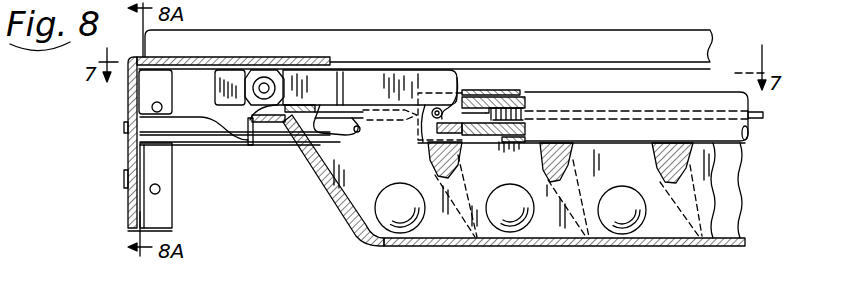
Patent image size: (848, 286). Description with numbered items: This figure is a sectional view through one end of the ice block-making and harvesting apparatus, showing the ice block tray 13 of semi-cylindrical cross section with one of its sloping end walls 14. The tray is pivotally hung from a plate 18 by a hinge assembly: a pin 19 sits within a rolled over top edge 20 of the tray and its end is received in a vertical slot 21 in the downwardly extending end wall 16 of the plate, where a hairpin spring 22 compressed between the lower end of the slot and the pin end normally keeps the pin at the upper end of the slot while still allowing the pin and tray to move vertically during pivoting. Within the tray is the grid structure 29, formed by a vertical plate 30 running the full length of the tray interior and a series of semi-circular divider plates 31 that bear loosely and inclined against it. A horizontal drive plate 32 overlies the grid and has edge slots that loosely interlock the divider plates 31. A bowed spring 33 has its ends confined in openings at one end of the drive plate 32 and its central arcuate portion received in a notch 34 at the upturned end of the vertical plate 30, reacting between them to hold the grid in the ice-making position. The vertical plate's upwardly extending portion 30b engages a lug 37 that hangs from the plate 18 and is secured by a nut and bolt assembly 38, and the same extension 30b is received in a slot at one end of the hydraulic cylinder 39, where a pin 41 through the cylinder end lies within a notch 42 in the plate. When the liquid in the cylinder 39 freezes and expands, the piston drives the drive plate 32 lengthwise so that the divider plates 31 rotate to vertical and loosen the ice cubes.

The ice block tray 13 is at (411, 247).
The sloping end wall 14 is at (326, 188).
The end wall of plate 16 is at (128, 218).
The plate 18 is at (604, 62).
The pin 19 is at (124, 128).
The rolled over top edge 20 is at (197, 138).
The vertical slot 21 is at (128, 154).
The hairpin spring 22 is at (146, 165).
The grid structure 29 is at (713, 85).
The vertical plate 30 is at (660, 236).
The upwardly extending portion 30b is at (407, 78).
The divider plate 31 is at (656, 162).
The horizontal plate 32 is at (296, 110).
The spring 33 is at (346, 112).
The notch 34 is at (353, 135).
The lug 37 is at (243, 70).
The nut and bolt assembly 38 is at (265, 72).
The hydraulic cylinder 39 is at (666, 92).
The pin 41 is at (431, 143).
The notch 42 is at (460, 92).